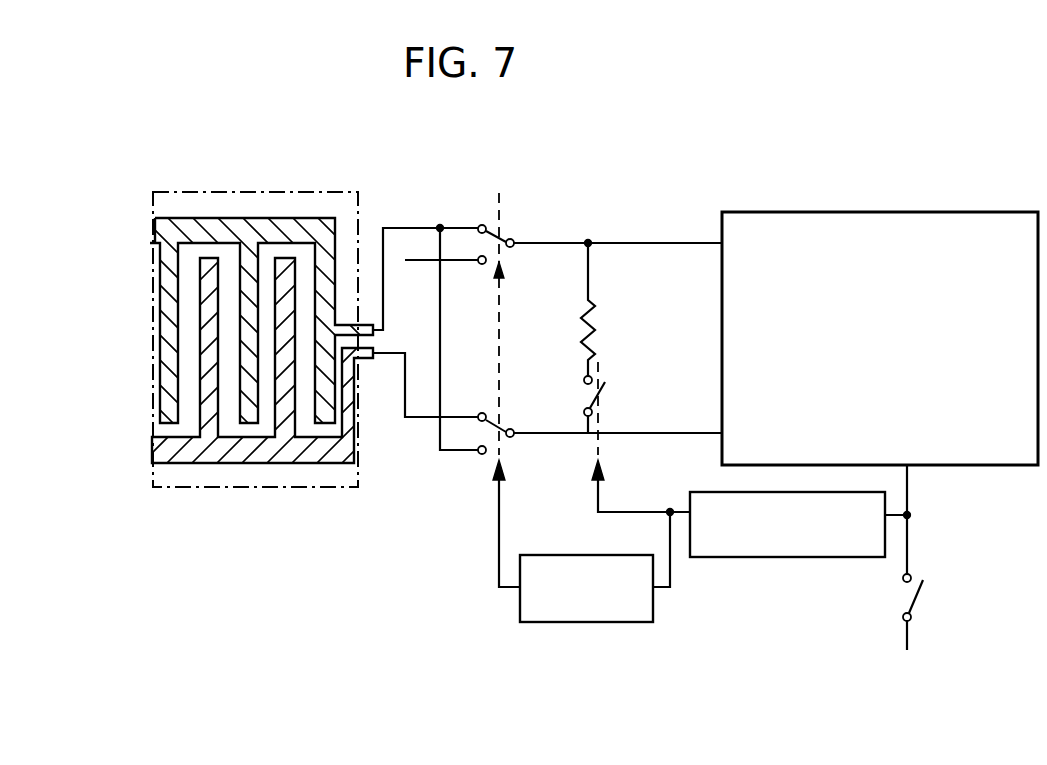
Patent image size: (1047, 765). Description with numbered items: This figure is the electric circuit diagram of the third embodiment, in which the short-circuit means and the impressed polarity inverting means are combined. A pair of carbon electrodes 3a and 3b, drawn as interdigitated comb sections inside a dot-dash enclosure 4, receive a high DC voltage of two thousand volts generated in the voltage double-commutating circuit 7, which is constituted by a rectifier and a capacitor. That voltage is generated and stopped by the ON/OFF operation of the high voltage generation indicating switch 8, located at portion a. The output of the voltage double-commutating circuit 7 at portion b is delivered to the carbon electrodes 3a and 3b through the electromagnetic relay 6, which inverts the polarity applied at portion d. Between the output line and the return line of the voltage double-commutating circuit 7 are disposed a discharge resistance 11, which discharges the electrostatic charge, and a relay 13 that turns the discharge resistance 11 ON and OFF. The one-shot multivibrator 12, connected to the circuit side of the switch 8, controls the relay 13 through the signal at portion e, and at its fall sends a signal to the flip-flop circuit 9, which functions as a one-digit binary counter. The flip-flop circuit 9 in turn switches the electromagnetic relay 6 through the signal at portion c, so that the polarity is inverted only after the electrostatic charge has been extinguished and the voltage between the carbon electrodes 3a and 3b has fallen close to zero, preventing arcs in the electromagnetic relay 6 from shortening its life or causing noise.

The carbon electrode 3a is at (279, 228).
The carbon electrode 3b is at (297, 455).
The sensor housing 4 is at (248, 487).
The electromagnetic relay 6 is at (512, 220).
The voltage double-commutating circuit 7 is at (885, 232).
The high-voltage generation indicating switch 8 is at (910, 592).
The flip-flop circuit 9 is at (587, 622).
The discharge resistance 11 is at (595, 327).
The one-shot multivibrator 12 is at (780, 557).
The relay 13 is at (598, 393).
The portion a is at (912, 542).
The portion b is at (667, 247).
The signal c is at (502, 502).
The portion d is at (410, 226).
The portion e is at (601, 492).